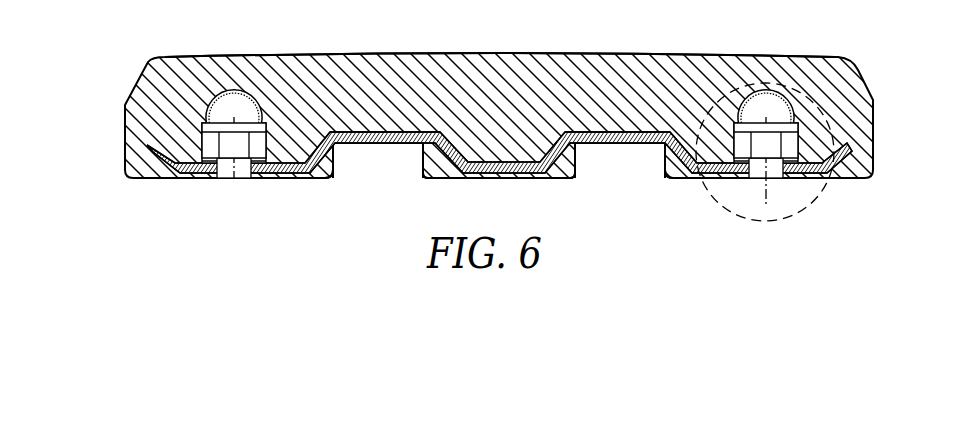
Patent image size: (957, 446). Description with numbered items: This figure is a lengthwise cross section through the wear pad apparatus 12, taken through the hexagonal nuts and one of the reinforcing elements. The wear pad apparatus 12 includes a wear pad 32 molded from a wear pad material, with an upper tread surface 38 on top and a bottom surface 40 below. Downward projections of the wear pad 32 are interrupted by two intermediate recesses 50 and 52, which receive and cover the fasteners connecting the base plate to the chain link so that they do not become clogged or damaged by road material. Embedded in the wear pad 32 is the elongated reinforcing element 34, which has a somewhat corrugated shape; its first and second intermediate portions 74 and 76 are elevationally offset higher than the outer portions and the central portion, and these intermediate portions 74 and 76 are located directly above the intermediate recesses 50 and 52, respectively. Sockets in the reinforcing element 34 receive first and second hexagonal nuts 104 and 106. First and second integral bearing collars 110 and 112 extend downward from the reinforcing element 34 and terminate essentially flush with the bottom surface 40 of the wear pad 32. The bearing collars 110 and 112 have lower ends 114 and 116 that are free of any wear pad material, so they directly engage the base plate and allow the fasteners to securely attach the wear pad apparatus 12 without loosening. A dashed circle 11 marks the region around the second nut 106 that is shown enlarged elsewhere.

The detail circle 11 is at (788, 220).
The wear pad apparatus 12 is at (505, 132).
The wear pad 32 is at (823, 75).
The first elongated reinforcing element 34 is at (150, 151).
The upper tread surface 38 is at (498, 53).
The bottom surface 40 is at (283, 180).
The intermediate recess 50 is at (378, 158).
The intermediate recess 52 is at (623, 158).
The first intermediate portion 74 is at (360, 132).
The second intermediate portion 76 is at (610, 132).
The first hexagonal nut 104 is at (226, 152).
The second hexagonal nut 106 is at (788, 147).
The first integral bearing collar 110 is at (174, 165).
The second integral bearing collar 112 is at (790, 174).
The lower end 114 is at (174, 165).
The lower end 116 is at (790, 174).